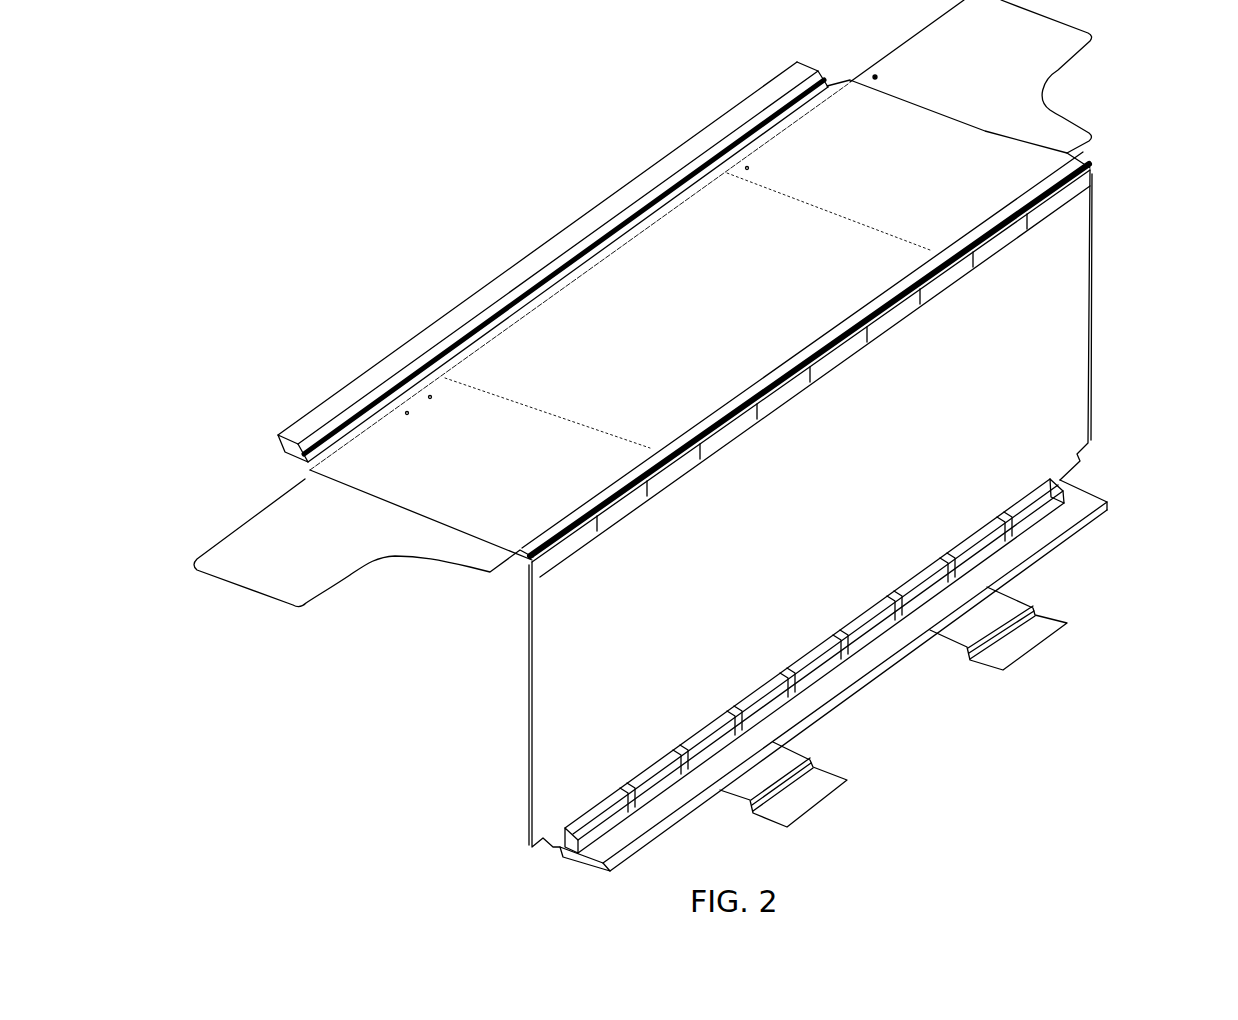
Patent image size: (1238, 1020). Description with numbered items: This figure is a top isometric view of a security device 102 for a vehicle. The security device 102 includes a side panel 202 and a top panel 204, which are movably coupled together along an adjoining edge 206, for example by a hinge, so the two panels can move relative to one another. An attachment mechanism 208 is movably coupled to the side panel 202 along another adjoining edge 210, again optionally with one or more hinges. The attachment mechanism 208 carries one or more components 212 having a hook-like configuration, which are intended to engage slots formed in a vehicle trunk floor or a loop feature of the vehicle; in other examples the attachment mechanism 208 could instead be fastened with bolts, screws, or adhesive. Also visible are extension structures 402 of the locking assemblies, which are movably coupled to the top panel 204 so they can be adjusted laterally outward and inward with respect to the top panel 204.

The security device 102 is at (316, 174).
The side panel 202 is at (528, 710).
The top panel 204 is at (613, 325).
The adjoining edge 206 is at (820, 355).
The attachment mechanism 208 is at (917, 648).
The adjoining edge 210 is at (1033, 512).
The components 212 is at (1047, 645).
The extension structure 402 is at (246, 515).